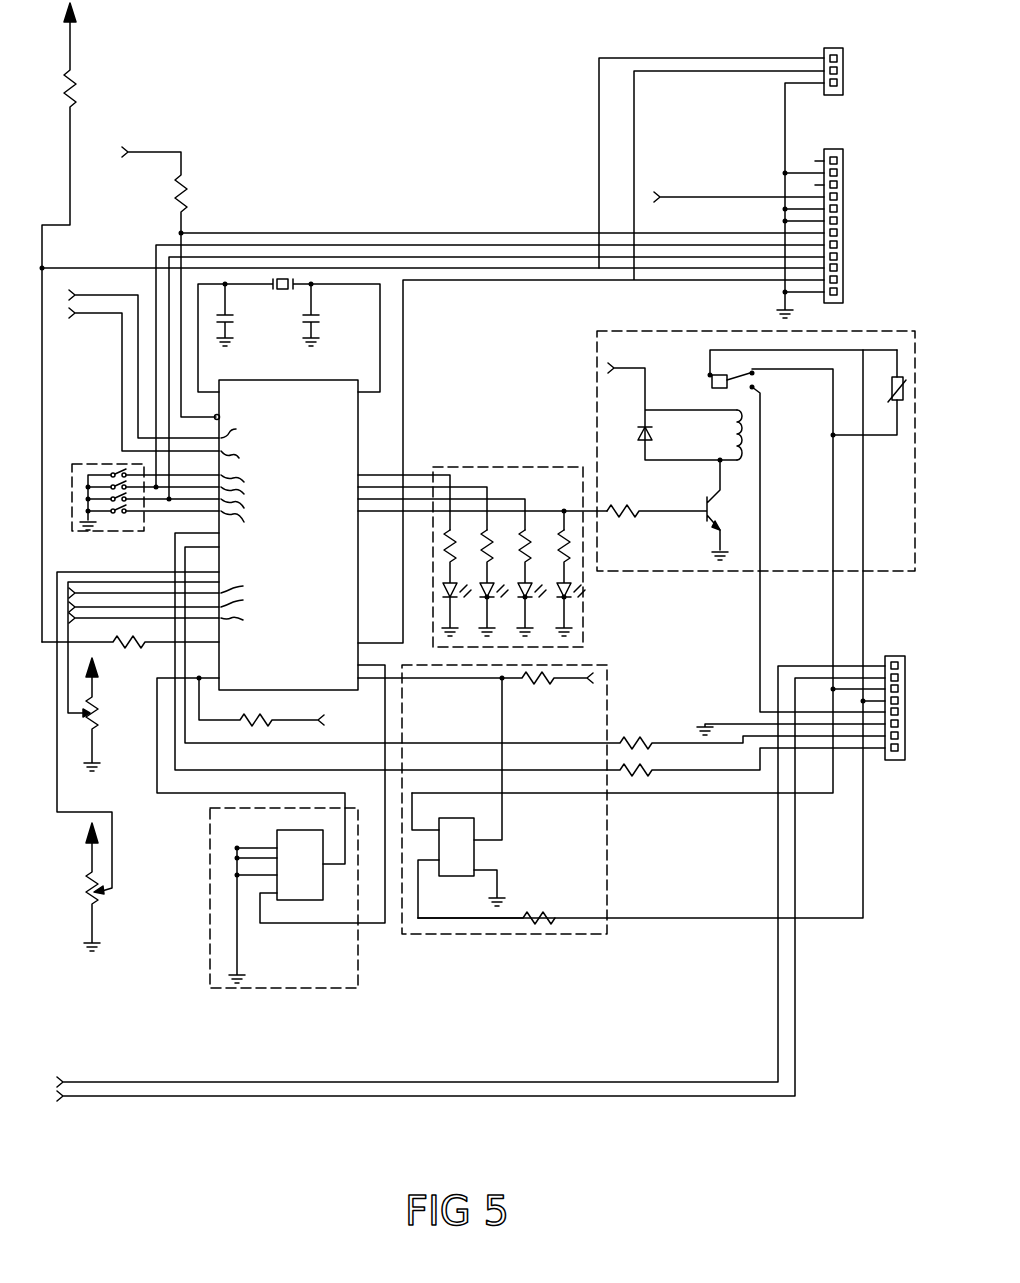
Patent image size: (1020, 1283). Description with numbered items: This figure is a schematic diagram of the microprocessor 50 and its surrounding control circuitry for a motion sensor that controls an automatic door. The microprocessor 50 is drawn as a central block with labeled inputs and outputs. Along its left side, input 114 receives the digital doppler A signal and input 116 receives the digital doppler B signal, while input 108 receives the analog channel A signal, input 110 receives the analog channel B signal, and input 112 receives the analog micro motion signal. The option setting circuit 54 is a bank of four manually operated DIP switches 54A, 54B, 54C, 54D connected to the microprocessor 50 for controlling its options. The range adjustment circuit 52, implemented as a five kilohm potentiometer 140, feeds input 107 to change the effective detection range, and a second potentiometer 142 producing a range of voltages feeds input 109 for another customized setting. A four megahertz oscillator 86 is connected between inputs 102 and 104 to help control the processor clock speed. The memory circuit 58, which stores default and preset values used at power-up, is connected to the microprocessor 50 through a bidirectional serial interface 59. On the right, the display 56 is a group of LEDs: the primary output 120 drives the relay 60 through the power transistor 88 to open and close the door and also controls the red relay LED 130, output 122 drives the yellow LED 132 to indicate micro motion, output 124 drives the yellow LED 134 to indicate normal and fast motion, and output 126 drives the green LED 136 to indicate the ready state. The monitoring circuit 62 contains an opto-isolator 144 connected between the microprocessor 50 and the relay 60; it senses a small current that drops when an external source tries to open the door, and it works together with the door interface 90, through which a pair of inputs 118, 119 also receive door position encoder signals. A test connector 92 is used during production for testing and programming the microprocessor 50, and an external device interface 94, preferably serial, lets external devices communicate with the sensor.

The microprocessor 50 is at (352, 398).
The range adjustment circuit 52 is at (97, 745).
The option setting circuit 54 is at (132, 458).
The DIP switch 54A is at (112, 472).
The DIP switch 54B is at (108, 484).
The DIP switch 54C is at (105, 496).
The DIP switch 54D is at (102, 508).
The display 56 is at (482, 538).
The memory circuit 58 is at (338, 990).
The bidirectional serial interface 59 is at (372, 923).
The relay 60 is at (663, 607).
The monitoring circuit 62 is at (482, 820).
The oscillator 86 is at (281, 291).
The power transistor 88 is at (707, 501).
The door interface 90 is at (897, 656).
The test connector 92 is at (845, 206).
The external device interface 94 is at (845, 66).
The input 102 is at (198, 372).
The input 104 is at (380, 350).
The input 107 is at (68, 656).
The input 108 is at (114, 593).
The input 109 is at (113, 852).
The input 110 is at (152, 607).
The input 112 is at (158, 621).
The input 114 is at (113, 296).
The input 116 is at (96, 318).
The input 118 is at (888, 752).
The input 119 is at (903, 760).
The output 120 is at (385, 512).
The output 122 is at (369, 502).
The output 124 is at (387, 488).
The output 126 is at (367, 476).
The relay LED 130 is at (572, 583).
The yellow LED 132 is at (525, 598).
The yellow LED 134 is at (487, 598).
The green LED 136 is at (440, 588).
The potentiometer 140 is at (101, 712).
The second potentiometer 142 is at (113, 905).
The opto-isolator 144 is at (470, 858).